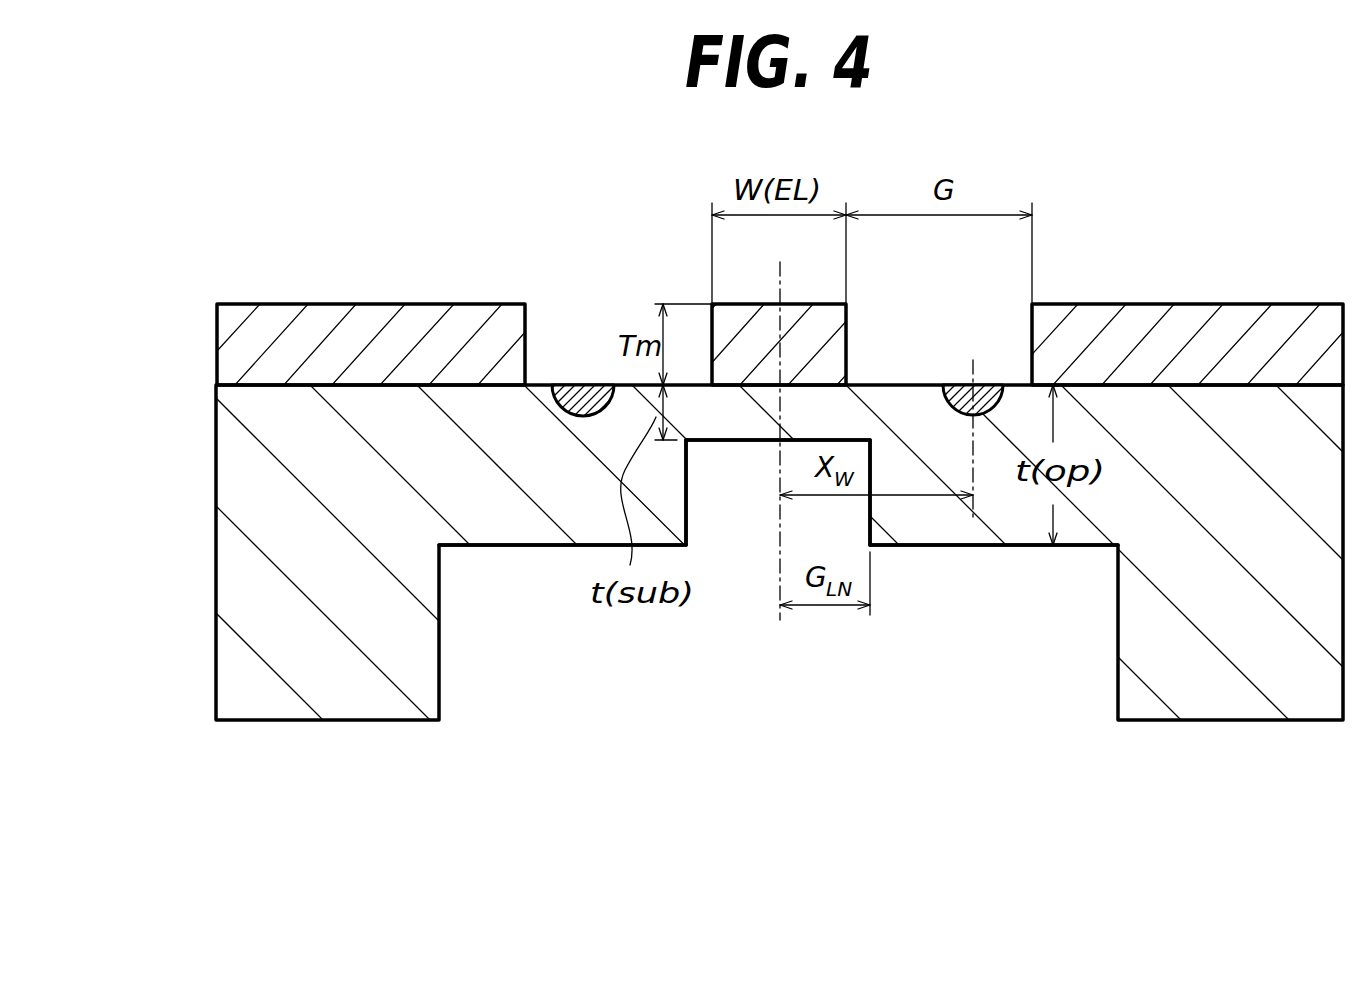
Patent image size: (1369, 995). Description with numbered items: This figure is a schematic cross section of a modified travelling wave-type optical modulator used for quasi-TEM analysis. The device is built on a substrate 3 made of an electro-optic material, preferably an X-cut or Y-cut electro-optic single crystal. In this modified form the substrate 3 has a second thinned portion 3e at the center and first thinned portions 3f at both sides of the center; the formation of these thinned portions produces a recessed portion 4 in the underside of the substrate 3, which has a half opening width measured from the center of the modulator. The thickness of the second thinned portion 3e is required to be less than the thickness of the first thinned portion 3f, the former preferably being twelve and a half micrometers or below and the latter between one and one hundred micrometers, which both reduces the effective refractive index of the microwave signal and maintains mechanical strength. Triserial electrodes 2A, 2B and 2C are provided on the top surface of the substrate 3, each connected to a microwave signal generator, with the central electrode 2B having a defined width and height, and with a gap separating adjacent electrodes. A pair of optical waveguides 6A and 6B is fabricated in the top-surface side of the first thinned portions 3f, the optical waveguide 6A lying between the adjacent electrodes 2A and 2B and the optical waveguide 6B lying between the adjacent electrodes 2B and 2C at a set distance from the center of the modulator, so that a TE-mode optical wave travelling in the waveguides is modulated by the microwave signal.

The electrode 2A is at (318, 327).
The central electrode 2B is at (823, 327).
The electrode 2C is at (1264, 343).
The substrate 3 is at (270, 530).
The second thinned portion 3e is at (760, 418).
The first thinned portion 3f is at (530, 513).
The recessed portion 4 is at (763, 492).
The optical waveguide 6A is at (584, 393).
The optical waveguide 6B is at (988, 383).